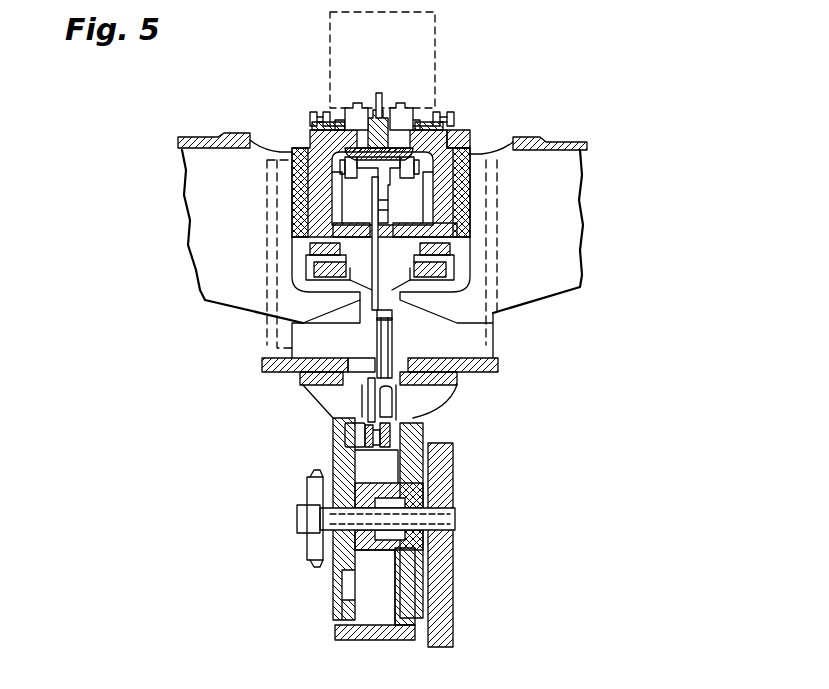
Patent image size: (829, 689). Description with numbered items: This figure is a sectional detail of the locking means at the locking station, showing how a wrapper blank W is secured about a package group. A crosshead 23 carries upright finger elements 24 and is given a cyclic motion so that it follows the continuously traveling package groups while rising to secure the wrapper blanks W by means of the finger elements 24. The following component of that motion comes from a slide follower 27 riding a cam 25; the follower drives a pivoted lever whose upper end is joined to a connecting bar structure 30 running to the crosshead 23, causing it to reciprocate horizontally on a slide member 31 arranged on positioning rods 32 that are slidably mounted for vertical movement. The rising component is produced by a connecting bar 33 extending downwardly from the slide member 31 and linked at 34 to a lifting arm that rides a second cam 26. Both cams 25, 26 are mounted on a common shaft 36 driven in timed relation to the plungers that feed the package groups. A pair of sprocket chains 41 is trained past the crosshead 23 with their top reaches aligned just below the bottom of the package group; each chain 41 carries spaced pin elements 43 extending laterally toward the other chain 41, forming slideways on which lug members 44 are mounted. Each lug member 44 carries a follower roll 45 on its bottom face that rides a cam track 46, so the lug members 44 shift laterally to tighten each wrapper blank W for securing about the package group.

The wrapper blank W is at (435, 33).
The crosshead 23 is at (400, 147).
The finger elements 24 is at (379, 93).
The cam 25 is at (455, 480).
The cam 26 is at (338, 450).
The slide follower 27 is at (420, 468).
The connecting bar structure 30 is at (402, 187).
The slide member 31 is at (373, 178).
The positioning rods 32 is at (392, 219).
The connecting bar 33 is at (372, 292).
The linking point 34 is at (395, 344).
The common shaft 36 is at (440, 522).
The sprocket chains 41 is at (310, 117).
The pin elements 43 is at (337, 120).
The lug members 44 is at (356, 104).
The follower roll 45 is at (357, 124).
The cam track 46 is at (335, 125).